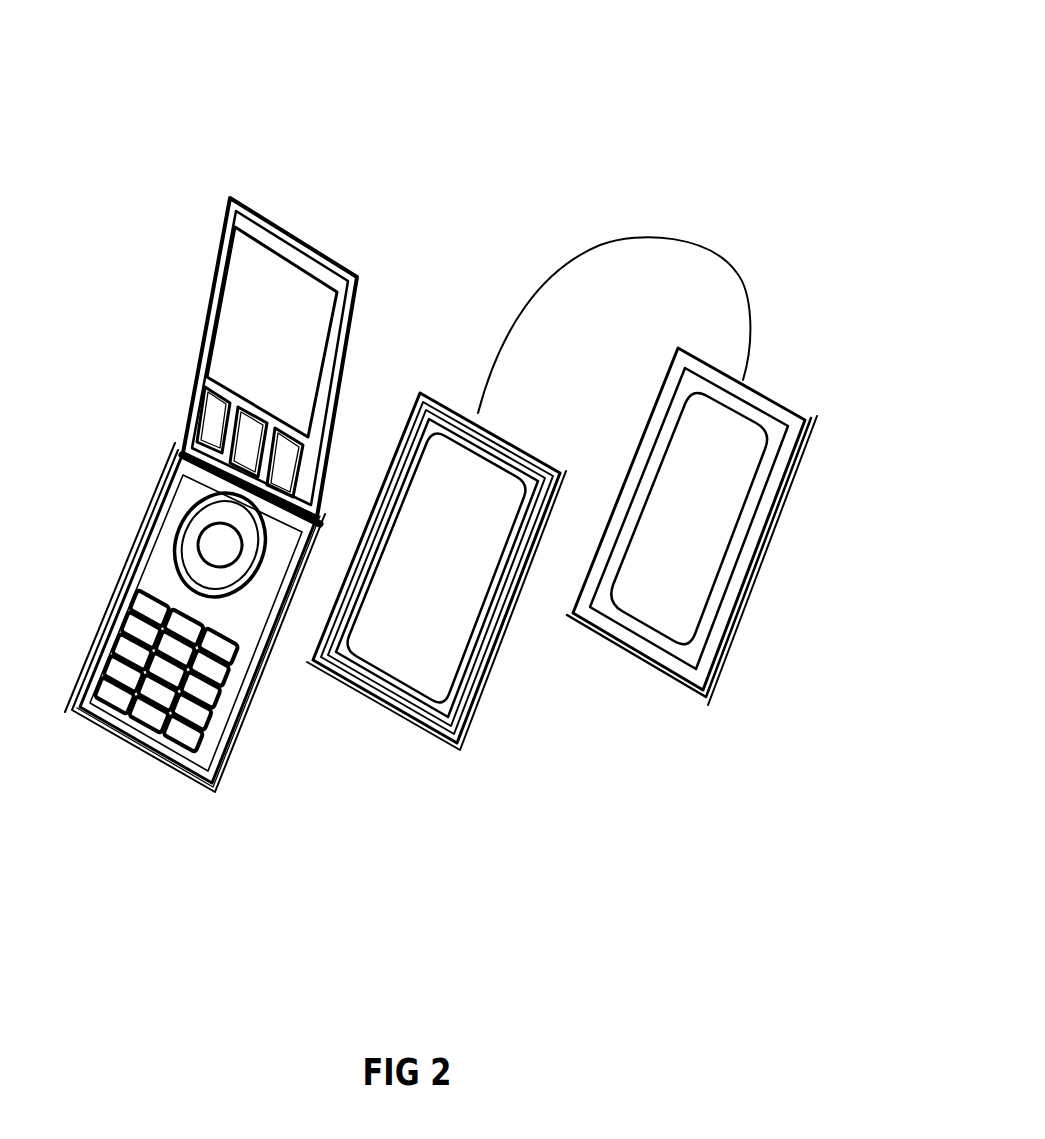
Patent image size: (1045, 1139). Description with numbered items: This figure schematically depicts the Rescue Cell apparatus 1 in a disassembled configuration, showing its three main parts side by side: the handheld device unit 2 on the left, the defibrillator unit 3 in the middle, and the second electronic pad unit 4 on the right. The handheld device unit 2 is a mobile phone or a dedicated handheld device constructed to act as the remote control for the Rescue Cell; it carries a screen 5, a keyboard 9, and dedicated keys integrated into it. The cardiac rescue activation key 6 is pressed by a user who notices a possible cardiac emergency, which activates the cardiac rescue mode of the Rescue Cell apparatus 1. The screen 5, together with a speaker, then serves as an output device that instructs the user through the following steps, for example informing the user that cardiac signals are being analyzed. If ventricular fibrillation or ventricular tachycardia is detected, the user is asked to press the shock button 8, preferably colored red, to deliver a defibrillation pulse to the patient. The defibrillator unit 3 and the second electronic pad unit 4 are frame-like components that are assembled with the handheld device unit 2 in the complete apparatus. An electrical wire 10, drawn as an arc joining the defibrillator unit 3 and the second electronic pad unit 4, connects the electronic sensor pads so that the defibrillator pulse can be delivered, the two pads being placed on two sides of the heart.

The Rescue Cell apparatus 1 is at (489, 92).
The handheld device unit 2 is at (225, 767).
The defibrillator unit 3 is at (405, 725).
The second electronic pad unit 4 is at (690, 687).
The screen 5 is at (225, 270).
The cardiac rescue activation key 6 is at (202, 398).
The shock button 8 is at (273, 458).
The keyboard 9 is at (128, 628).
The electrical wire 10 is at (653, 237).